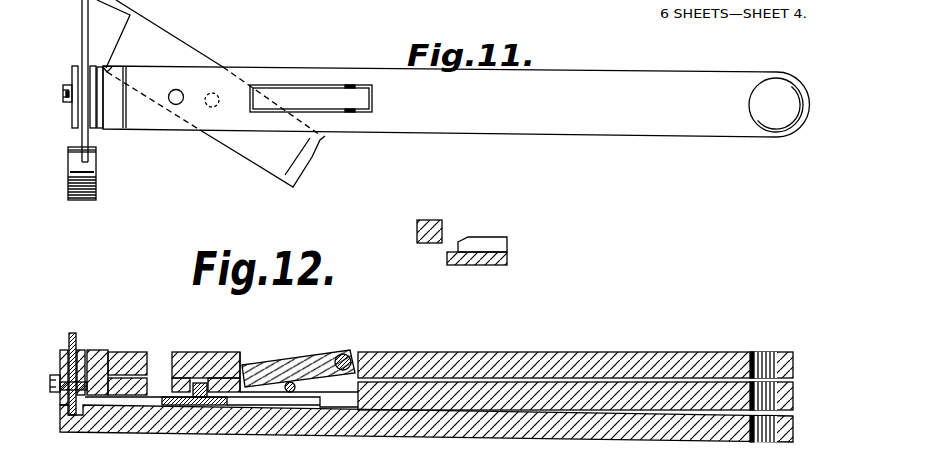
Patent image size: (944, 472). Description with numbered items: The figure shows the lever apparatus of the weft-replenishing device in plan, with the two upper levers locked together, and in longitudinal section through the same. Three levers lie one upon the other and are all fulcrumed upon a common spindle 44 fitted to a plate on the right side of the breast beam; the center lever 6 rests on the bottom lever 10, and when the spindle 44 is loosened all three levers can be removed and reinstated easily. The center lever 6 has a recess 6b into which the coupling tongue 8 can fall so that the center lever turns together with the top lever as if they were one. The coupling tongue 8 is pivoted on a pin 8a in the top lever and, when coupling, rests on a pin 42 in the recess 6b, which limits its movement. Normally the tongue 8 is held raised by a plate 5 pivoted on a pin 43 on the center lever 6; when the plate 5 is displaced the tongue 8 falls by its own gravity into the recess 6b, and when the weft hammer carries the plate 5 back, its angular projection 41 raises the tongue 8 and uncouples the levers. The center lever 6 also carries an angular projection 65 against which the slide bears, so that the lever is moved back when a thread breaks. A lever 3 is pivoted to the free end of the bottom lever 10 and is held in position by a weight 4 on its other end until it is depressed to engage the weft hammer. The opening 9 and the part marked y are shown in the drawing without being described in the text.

In FIG. 11, the lever 3 is at (83, 26).
In FIG. 12, the lever 3 is at (76, 334).
In FIG. 11, the weight 4 is at (93, 172).
In FIG. 11, the plate 5 is at (143, 22).
In FIG. 12, the plate 5 is at (174, 402).
In FIG. 12, the center lever 6 is at (784, 396).
In FIG. 12, the recess 6b is at (275, 390).
In FIG. 11, the coupling tongue 8 is at (365, 101).
In FIG. 12, the coupling tongue 8 is at (268, 372).
In FIG. 11, the pin 8a is at (352, 87).
In FIG. 12, the pin 8a is at (347, 353).
In FIG. 11, the hole 9 is at (182, 92).
In FIG. 12, the hole 9 is at (162, 360).
In FIG. 11, the bottom lever 10 is at (77, 118).
In FIG. 12, the bottom lever 10 is at (112, 424).
In FIG. 11, the angular projection 41 is at (311, 158).
In FIG. 12, the angular projection 41 is at (482, 240).
In FIG. 12, the pin 42 is at (297, 388).
In FIG. 11, the pin 43 is at (210, 108).
In FIG. 11, the common spindle 44 is at (775, 90).
In FIG. 11, the angular projection 65 is at (113, 118).
In FIG. 12, the angular projection 65 is at (102, 357).
In FIG. 11, the bar y is at (535, 75).
In FIG. 12, the bar y is at (476, 360).